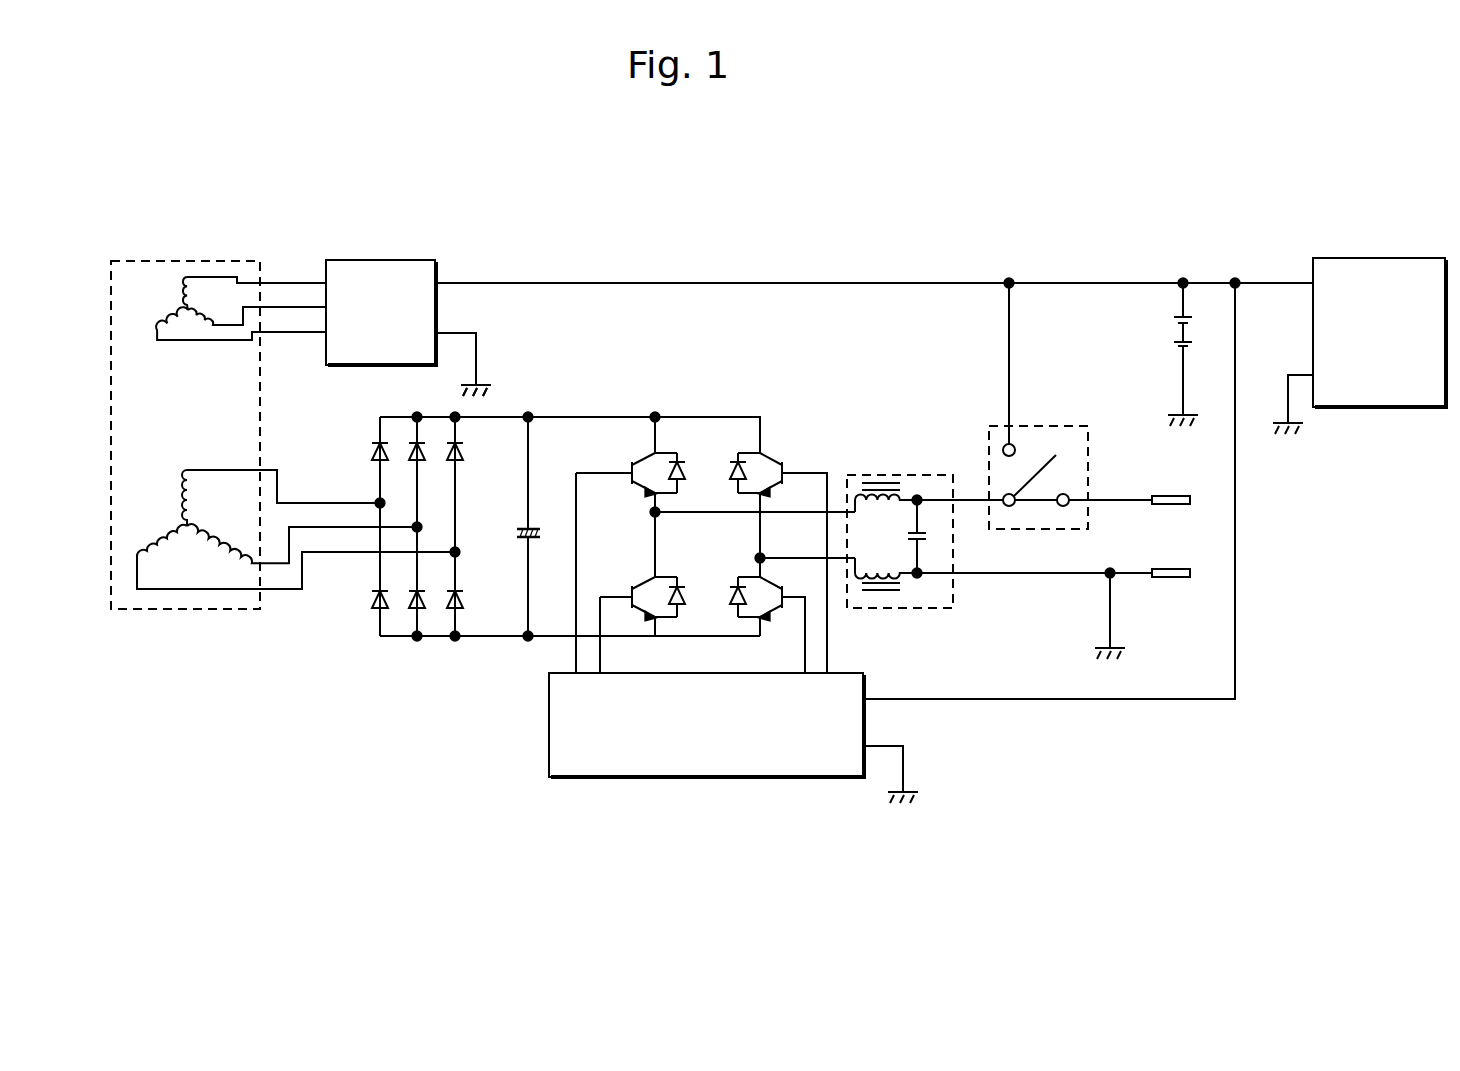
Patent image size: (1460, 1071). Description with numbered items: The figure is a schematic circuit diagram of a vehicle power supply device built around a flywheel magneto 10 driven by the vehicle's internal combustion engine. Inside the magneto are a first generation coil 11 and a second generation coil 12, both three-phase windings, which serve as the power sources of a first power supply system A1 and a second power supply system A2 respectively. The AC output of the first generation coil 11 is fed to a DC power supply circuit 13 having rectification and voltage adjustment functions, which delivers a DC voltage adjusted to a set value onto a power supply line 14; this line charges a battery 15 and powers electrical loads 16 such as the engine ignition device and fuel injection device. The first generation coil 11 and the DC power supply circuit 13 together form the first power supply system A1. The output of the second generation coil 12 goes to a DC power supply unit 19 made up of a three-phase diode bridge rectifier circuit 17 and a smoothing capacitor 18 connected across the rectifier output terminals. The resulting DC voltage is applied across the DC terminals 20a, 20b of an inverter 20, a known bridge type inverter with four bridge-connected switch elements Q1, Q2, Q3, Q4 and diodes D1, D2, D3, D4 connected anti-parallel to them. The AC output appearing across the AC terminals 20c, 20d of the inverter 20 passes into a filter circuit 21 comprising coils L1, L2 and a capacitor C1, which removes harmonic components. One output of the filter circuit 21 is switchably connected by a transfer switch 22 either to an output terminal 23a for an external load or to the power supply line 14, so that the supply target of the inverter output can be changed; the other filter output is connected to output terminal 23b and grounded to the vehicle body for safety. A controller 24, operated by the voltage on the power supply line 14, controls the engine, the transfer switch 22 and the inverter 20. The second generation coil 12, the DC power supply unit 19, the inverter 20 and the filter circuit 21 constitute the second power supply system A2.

The flywheel magneto 10 is at (141, 260).
The first generation coil 11 is at (199, 300).
The second generation coil 12 is at (182, 543).
The DC power supply circuit 13 is at (350, 364).
The power supply line 14 is at (823, 283).
The battery 15 is at (1175, 317).
The electrical loads 16 is at (1312, 265).
The rectifier circuit 17 is at (427, 644).
The smoothing capacitor 18 is at (512, 548).
The DC power supply unit 19 is at (487, 407).
The inverter 20 is at (668, 529).
The DC terminal 20a is at (561, 412).
The DC terminal 20b is at (553, 637).
The AC terminal 20c is at (805, 511).
The AC terminal 20d is at (800, 561).
The filter circuit 21 is at (921, 536).
The transfer switch 22 is at (1092, 432).
The output terminal 23a is at (1190, 500).
The output terminal 23b is at (1190, 573).
The controller 24 is at (715, 778).
The first power supply system A1 is at (345, 243).
The second power supply system A2 is at (706, 393).
The switch element Q1 is at (650, 456).
The switch element Q2 is at (645, 585).
The switch element Q3 is at (790, 446).
The switch element Q4 is at (775, 614).
The diode D1 is at (683, 461).
The diode D2 is at (681, 586).
The diode D3 is at (735, 466).
The diode D4 is at (730, 598).
The coil L1 is at (904, 497).
The coil L2 is at (898, 578).
The capacitor C1 is at (930, 537).